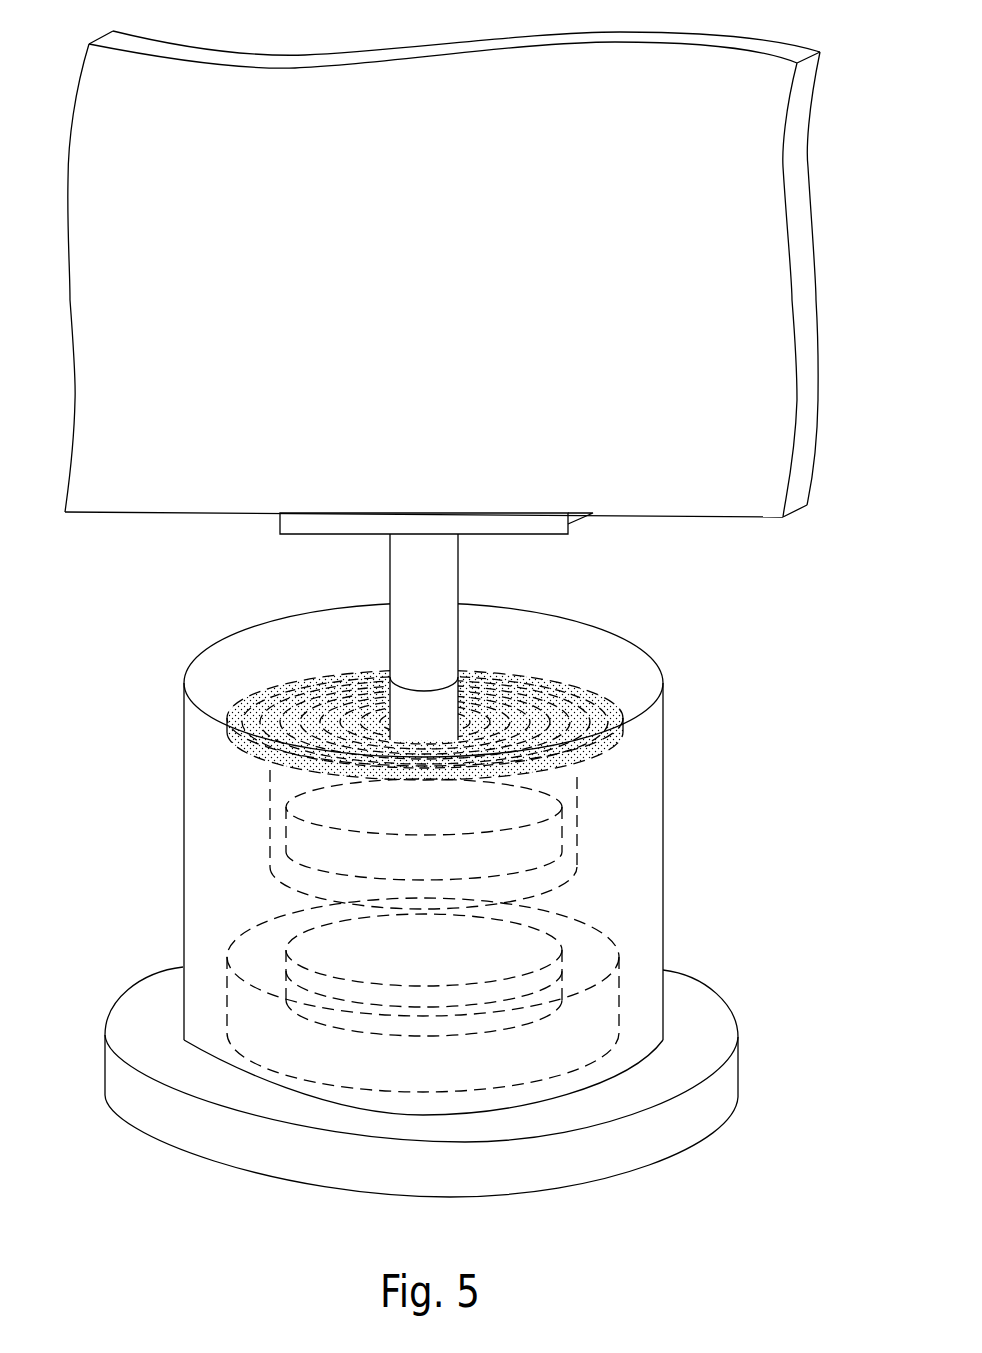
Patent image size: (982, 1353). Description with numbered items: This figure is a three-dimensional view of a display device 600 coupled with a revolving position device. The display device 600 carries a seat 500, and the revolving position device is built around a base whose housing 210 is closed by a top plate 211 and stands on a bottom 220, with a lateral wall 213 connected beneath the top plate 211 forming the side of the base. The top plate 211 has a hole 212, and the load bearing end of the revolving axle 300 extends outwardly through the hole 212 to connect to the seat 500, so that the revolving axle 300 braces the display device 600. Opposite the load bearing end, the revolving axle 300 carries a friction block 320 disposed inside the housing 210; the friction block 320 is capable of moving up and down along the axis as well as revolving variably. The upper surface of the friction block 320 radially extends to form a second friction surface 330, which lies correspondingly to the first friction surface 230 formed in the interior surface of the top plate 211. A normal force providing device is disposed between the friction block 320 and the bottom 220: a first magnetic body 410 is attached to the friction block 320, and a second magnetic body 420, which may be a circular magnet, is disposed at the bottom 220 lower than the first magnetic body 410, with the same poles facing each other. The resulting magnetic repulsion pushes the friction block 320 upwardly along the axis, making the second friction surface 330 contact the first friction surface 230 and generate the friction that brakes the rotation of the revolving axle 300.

The display device 600 is at (553, 37).
The seat 500 is at (560, 524).
The revolving axle 300 is at (460, 580).
The top plate 211 is at (228, 642).
The hole 212 is at (386, 678).
The lateral wall 213 is at (183, 803).
The first friction surface 230 is at (606, 712).
The second friction surface 330 is at (540, 705).
The friction block 320 is at (577, 801).
The first magnetic body 410 is at (432, 876).
The second magnetic body 420 is at (442, 975).
The bottom 220 is at (602, 1057).
The housing 210 is at (663, 935).